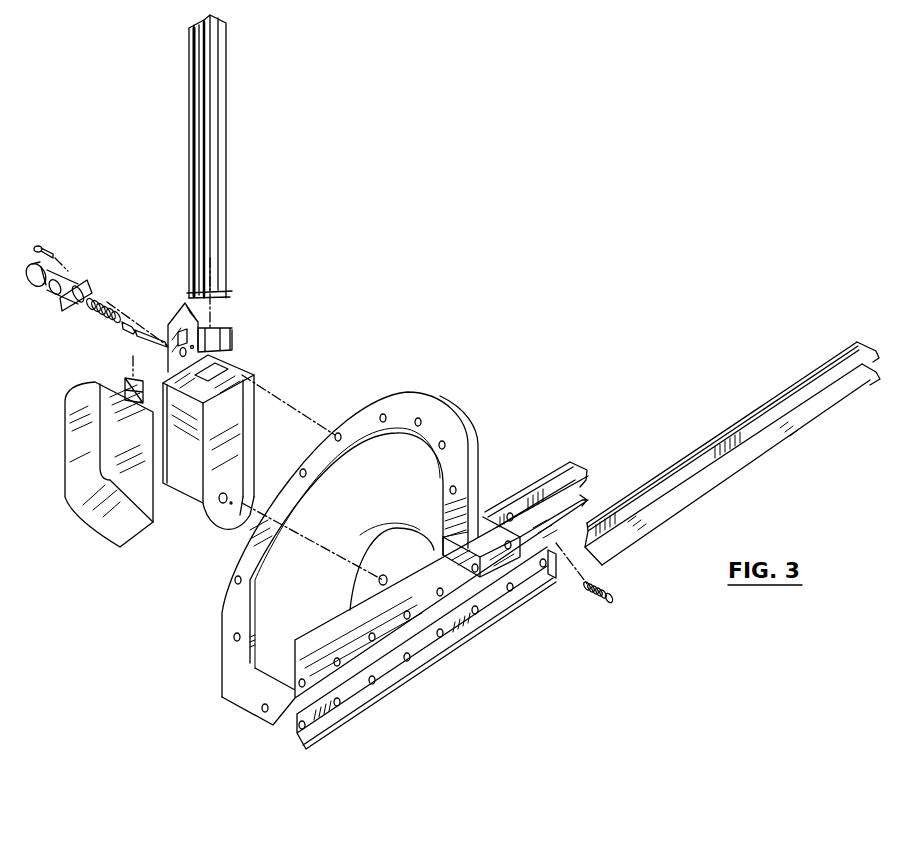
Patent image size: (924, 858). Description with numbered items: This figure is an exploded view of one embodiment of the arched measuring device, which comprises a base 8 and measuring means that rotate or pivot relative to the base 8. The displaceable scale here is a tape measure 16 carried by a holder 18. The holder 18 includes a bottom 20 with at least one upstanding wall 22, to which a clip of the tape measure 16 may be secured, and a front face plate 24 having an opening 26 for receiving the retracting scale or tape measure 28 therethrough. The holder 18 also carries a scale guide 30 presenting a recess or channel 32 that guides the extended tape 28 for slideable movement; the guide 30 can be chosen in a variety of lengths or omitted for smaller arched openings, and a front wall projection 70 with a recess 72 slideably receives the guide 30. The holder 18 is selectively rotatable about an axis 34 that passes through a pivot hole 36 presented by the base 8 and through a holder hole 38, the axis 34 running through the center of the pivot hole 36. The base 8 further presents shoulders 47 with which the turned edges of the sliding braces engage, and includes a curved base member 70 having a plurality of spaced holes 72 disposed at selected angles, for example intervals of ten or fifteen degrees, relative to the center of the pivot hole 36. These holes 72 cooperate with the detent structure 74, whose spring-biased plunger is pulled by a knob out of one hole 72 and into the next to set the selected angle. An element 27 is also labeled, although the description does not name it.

The base 8 is at (360, 647).
The tape measure 16 is at (125, 535).
The holder 18 is at (236, 409).
The bottom 20 is at (236, 451).
The upstanding wall 22 is at (185, 482).
The front face plate 24 is at (232, 350).
The opening 26 is at (247, 378).
The bracket plate 27 is at (223, 333).
The retracting scale or tape measure 28 is at (130, 377).
The scale guide 30 is at (222, 197).
The recess or channel 32 is at (204, 135).
The axis 34 is at (295, 532).
The pivot hole 36 is at (387, 578).
The holder hole 38 is at (225, 494).
The shoulders 47 is at (558, 560).
The curved base member 70 is at (232, 297).
The spaced holes 72 is at (445, 443).
The detent structure 74 is at (121, 298).